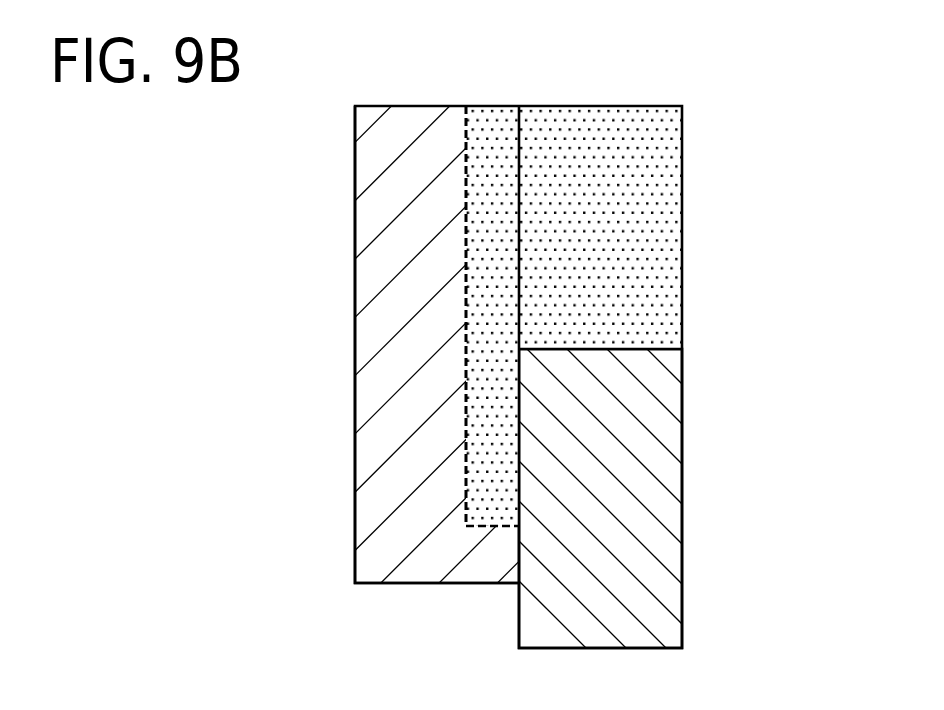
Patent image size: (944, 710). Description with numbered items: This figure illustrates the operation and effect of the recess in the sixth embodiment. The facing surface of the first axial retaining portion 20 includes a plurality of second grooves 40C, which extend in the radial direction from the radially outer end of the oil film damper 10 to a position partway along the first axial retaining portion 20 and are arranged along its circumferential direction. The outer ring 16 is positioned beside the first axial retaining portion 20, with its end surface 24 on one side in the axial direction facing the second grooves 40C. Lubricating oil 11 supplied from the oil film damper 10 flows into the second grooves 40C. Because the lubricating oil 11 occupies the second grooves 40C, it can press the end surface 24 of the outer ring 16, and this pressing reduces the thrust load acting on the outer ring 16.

The oil film damper 10 is at (682, 160).
The lubricating oil 11 is at (650, 288).
The outer ring 16 is at (682, 460).
The first axial retaining portion 20 is at (355, 508).
The end surface 24 is at (519, 463).
The second groove 40C is at (462, 483).